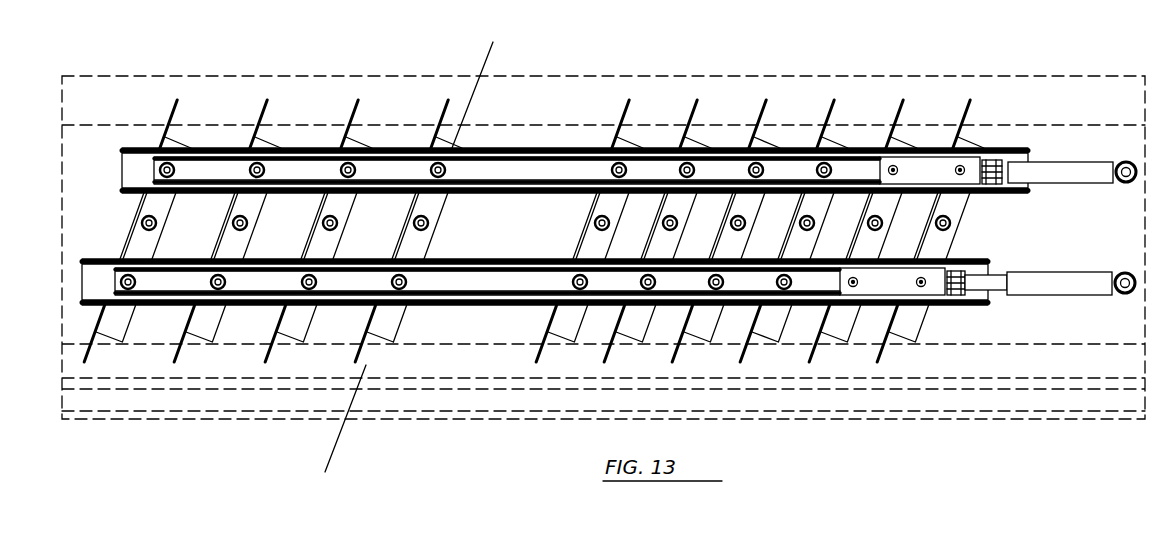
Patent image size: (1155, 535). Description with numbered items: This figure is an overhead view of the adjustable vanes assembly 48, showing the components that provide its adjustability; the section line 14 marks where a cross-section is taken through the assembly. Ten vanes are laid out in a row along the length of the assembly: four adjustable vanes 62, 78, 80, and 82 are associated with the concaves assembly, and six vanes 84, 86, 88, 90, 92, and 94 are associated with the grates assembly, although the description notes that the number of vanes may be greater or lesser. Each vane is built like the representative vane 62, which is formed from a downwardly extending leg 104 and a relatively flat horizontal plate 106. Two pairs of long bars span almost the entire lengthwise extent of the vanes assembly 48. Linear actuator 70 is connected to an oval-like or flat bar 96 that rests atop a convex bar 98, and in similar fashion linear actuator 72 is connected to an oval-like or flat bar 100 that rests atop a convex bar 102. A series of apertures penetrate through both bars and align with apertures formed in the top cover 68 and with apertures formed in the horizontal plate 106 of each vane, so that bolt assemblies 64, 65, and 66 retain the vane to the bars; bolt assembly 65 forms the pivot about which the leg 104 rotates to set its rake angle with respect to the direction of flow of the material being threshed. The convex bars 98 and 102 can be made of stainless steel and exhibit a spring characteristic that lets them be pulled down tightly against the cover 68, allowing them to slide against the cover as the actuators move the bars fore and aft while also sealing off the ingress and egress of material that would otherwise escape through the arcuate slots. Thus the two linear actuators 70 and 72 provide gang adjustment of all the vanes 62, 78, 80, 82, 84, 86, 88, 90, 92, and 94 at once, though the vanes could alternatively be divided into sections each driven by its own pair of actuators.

The section line 14- 14 is at (535, 60).
The adjustable vanes assembly 48 is at (175, 64).
The vane 62 is at (373, 336).
The bolt assembly 64 is at (402, 277).
The bolt assembly 65 is at (424, 218).
The bolt assembly 66 is at (447, 166).
The top cover 68 is at (1030, 420).
The linear actuator 70 is at (1065, 287).
The linear actuator 72 is at (1055, 168).
The vane 78 is at (355, 99).
The vane 80 is at (265, 98).
The vane 82 is at (80, 361).
The vane 84 is at (628, 99).
The vane 86 is at (698, 99).
The vane 88 is at (766, 99).
The vane 90 is at (834, 99).
The vane 92 is at (903, 99).
The vane 94 is at (970, 99).
The flat bar 96 is at (519, 248).
The convex bar 98 is at (103, 280).
The flat bar 100 is at (540, 137).
The convex bar 102 is at (137, 170).
The downwardly extending leg 104 is at (356, 354).
The horizontal plate 106 is at (394, 321).